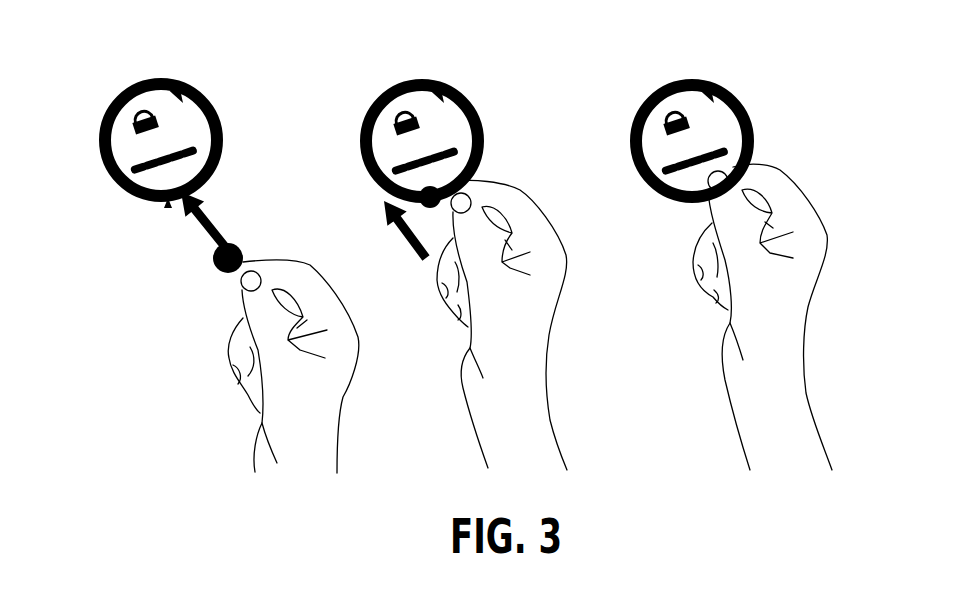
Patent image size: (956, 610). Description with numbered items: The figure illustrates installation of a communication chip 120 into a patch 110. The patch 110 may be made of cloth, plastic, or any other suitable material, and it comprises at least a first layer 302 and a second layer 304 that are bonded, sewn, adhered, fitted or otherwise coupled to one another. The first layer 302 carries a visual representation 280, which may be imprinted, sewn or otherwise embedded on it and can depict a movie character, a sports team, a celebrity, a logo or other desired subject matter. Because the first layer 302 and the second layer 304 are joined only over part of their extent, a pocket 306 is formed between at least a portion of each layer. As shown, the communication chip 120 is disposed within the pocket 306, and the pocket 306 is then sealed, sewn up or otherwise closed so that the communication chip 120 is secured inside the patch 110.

The patch 110 is at (118, 100).
The communication chip 120 is at (216, 272).
The visual representation 280 is at (175, 90).
The first layer 302 is at (163, 196).
The second layer 304 is at (176, 207).
The pocket 306 is at (167, 210).